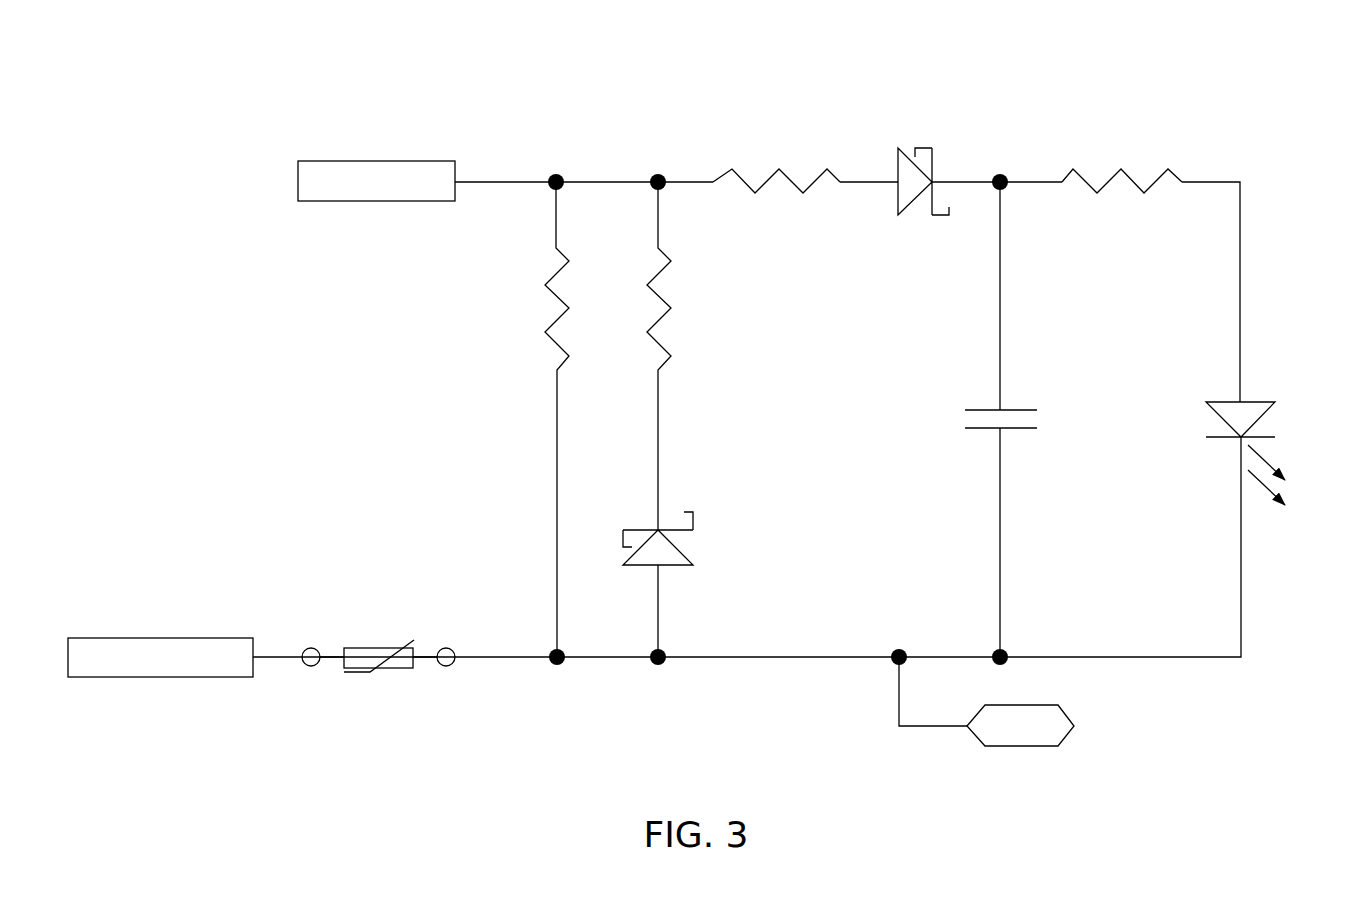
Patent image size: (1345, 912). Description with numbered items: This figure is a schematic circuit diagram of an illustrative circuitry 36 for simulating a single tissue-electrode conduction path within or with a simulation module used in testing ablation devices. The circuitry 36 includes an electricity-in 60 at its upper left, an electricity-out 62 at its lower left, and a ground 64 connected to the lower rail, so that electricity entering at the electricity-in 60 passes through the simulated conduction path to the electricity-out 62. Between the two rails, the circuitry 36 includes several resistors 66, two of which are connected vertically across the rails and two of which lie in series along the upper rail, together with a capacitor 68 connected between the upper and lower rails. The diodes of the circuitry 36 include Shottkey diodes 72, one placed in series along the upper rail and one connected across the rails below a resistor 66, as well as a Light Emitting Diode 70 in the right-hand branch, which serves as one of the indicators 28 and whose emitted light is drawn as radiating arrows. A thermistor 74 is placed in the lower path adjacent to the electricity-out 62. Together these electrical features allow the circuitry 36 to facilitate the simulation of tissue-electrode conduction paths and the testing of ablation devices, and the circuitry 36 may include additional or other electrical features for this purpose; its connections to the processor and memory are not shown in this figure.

The circuitry 36 is at (1220, 100).
The electricity-in 60 is at (377, 161).
The electricity-out 62 is at (160, 638).
The ground 64 is at (1020, 746).
The resistors 66 is at (525, 327).
The capacitors 68 is at (961, 395).
The Light Emitting Diodes (LEDs) 70 is at (1208, 388).
The Shottkey diodes 72 is at (893, 136).
The thermistors 74 is at (373, 630).
The indicators 28 is at (1272, 514).